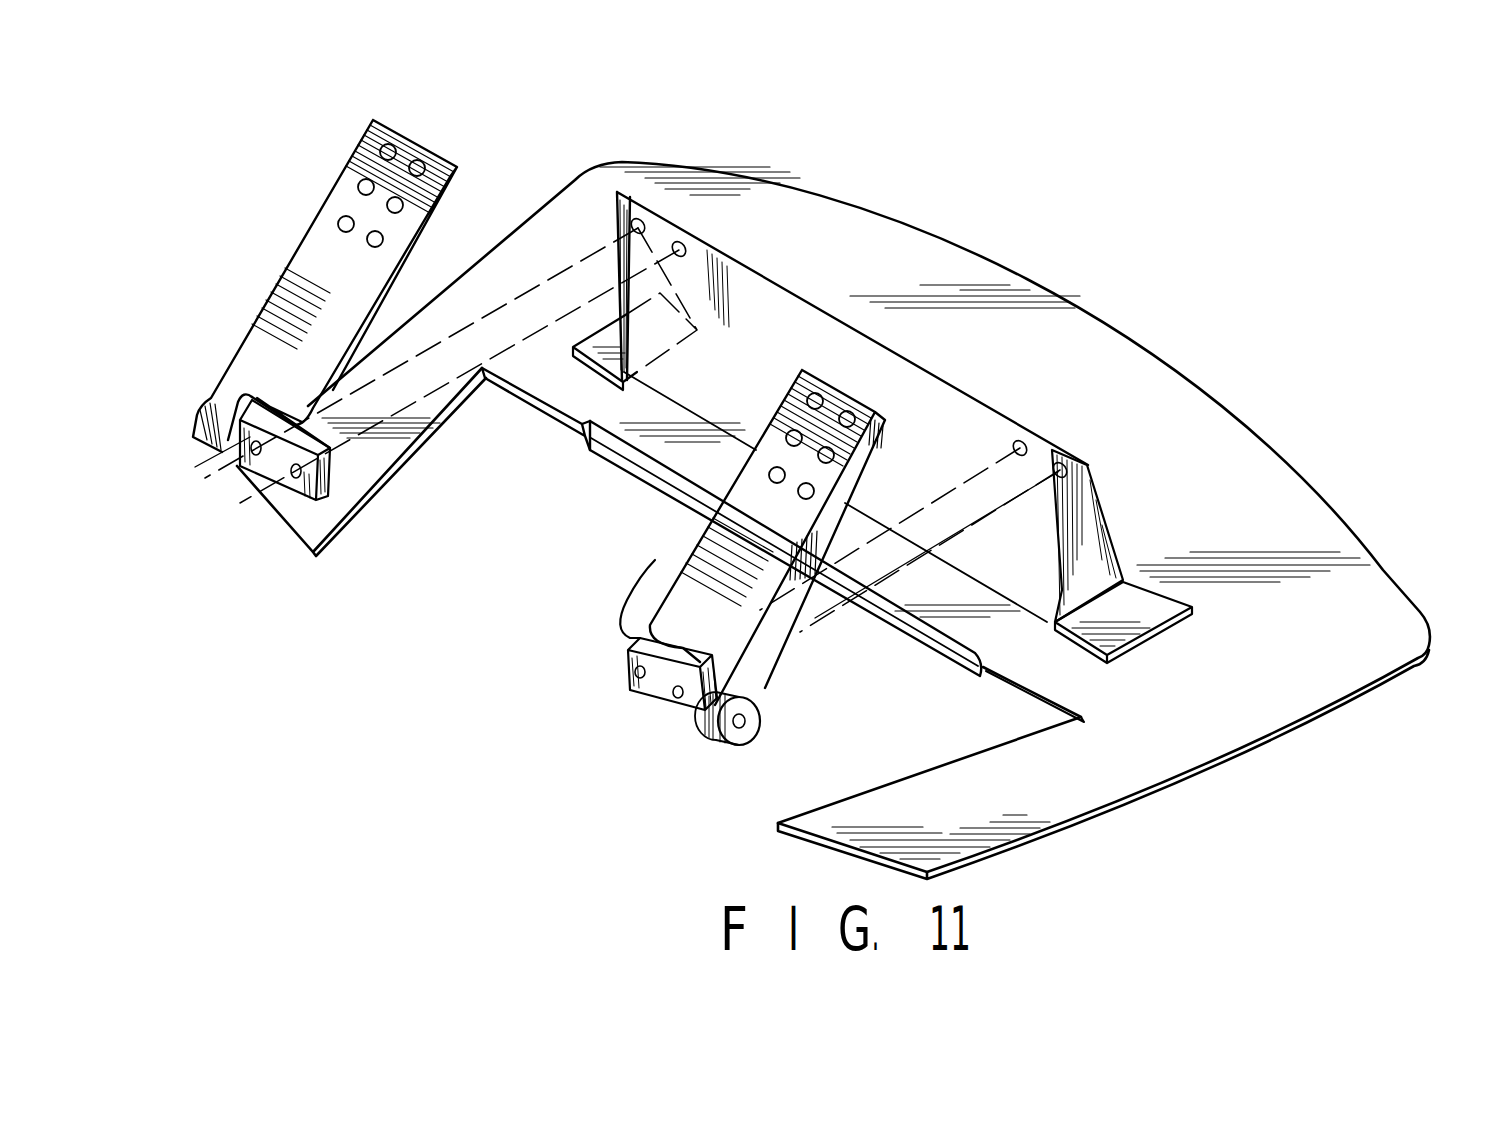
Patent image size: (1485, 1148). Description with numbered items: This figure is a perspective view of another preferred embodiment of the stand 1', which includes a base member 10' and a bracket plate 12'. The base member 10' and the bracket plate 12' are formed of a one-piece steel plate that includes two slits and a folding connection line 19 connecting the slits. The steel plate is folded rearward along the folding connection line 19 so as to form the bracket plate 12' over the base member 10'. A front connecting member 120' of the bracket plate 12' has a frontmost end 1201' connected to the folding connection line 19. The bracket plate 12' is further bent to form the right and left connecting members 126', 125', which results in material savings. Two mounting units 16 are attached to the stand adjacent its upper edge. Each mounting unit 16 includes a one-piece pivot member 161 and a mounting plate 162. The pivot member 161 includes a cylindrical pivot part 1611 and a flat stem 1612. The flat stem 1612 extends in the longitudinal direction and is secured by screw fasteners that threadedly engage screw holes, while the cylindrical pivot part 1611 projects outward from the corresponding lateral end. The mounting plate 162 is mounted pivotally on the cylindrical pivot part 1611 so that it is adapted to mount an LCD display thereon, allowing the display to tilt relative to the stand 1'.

The stand 1' is at (811, 499).
The base member 10' is at (812, 520).
The bracket plate 12' is at (1158, 485).
The mounting unit 16 is at (835, 378).
The mounting plate 162 is at (880, 396).
The pivot member 161 is at (637, 637).
The cylindrical pivot part 1611 is at (750, 723).
The flat stem 1612 is at (650, 688).
The left connecting member 125' is at (547, 378).
The right connecting member 126' is at (1187, 622).
The front connecting member 120' is at (731, 528).
The frontmost end 1201' is at (761, 552).
The folding connection line 19 is at (590, 470).